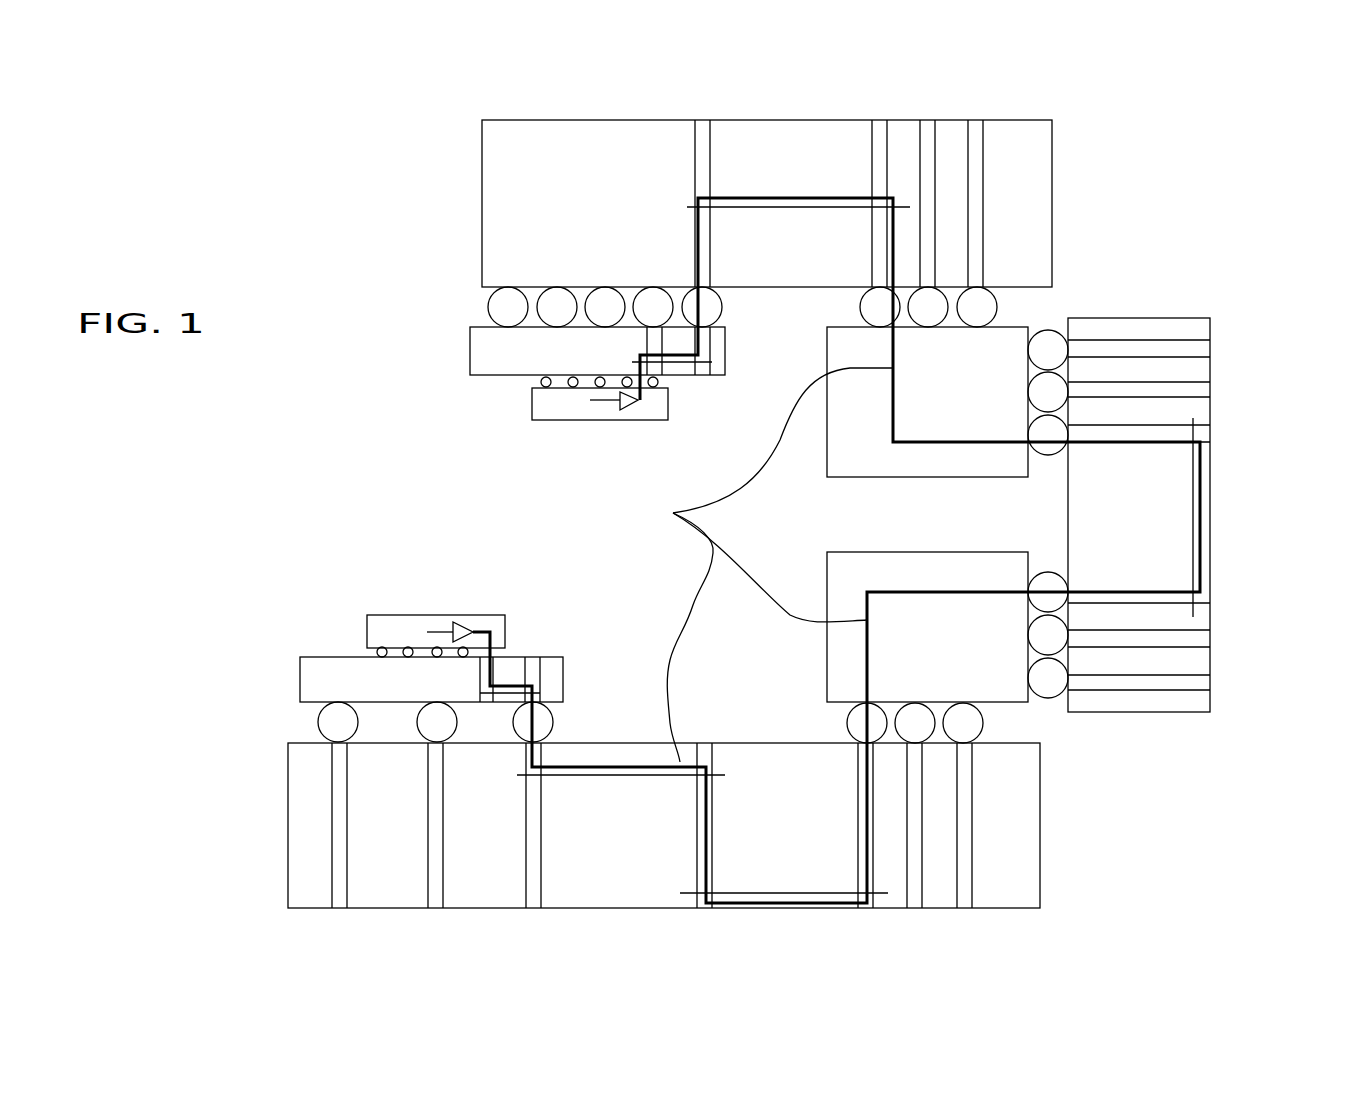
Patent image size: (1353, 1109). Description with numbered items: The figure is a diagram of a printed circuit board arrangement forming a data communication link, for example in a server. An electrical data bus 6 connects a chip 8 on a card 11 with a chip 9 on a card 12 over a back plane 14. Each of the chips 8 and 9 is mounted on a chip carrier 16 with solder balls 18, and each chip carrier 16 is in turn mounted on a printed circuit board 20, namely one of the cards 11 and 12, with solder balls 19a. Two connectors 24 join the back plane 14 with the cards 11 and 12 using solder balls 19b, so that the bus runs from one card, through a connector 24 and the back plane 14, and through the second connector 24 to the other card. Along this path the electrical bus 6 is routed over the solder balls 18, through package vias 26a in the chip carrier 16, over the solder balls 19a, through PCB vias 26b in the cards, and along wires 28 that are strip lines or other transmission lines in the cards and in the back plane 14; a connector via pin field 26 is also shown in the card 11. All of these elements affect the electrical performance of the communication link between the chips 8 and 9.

The electrical data bus 6 is at (710, 565).
The chip 8 is at (407, 623).
The chip 9 is at (543, 410).
The card 11 is at (1042, 826).
The card 12 is at (470, 192).
The back plane 14 is at (1230, 333).
The chip carrier 16 is at (470, 357).
The solder balls 18 is at (540, 380).
The solder balls 19a is at (488, 307).
The solder balls 19b is at (1000, 305).
The printed circuit board 20 is at (587, 122).
The connector 24 is at (900, 460).
The connector via pin field 26 is at (970, 906).
The package via 26a is at (705, 360).
The PCB via 26b is at (985, 172).
The wire 28 is at (828, 197).